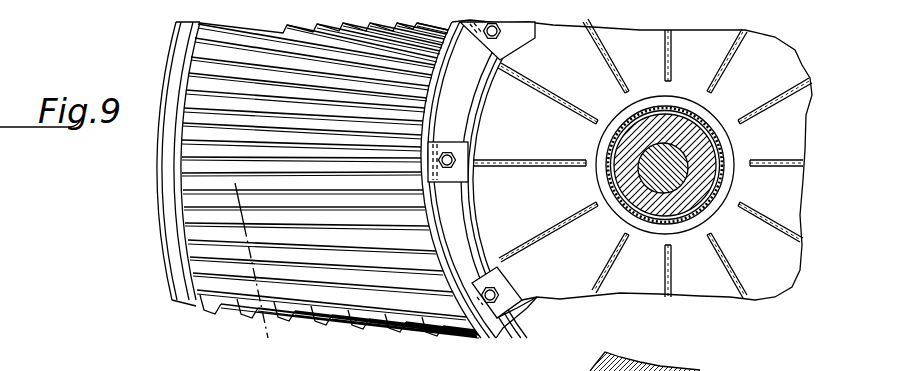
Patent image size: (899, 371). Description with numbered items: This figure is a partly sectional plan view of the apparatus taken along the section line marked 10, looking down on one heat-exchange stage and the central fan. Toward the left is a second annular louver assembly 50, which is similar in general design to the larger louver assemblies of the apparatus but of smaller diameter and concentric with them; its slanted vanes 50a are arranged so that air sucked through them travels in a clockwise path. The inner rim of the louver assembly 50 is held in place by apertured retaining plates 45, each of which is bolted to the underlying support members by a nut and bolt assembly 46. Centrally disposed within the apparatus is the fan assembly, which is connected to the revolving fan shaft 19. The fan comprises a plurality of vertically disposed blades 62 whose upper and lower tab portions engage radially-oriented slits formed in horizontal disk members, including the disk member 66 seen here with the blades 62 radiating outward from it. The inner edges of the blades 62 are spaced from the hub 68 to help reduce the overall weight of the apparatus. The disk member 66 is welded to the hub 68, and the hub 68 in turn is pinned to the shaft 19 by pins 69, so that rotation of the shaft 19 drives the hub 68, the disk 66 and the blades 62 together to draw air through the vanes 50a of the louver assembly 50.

The heat exchanger section line 10 is at (224, 198).
The fan shaft 19 is at (677, 177).
The apertured retaining plate 45 is at (452, 174).
The nut and bolt assembly 46 is at (455, 158).
The second annular louver assembly 50 is at (322, 294).
The vane 50a is at (417, 332).
The blade 62 is at (556, 226).
The horizontal disk member 66 is at (632, 278).
The hub 68 is at (637, 190).
The pin 69 is at (677, 224).